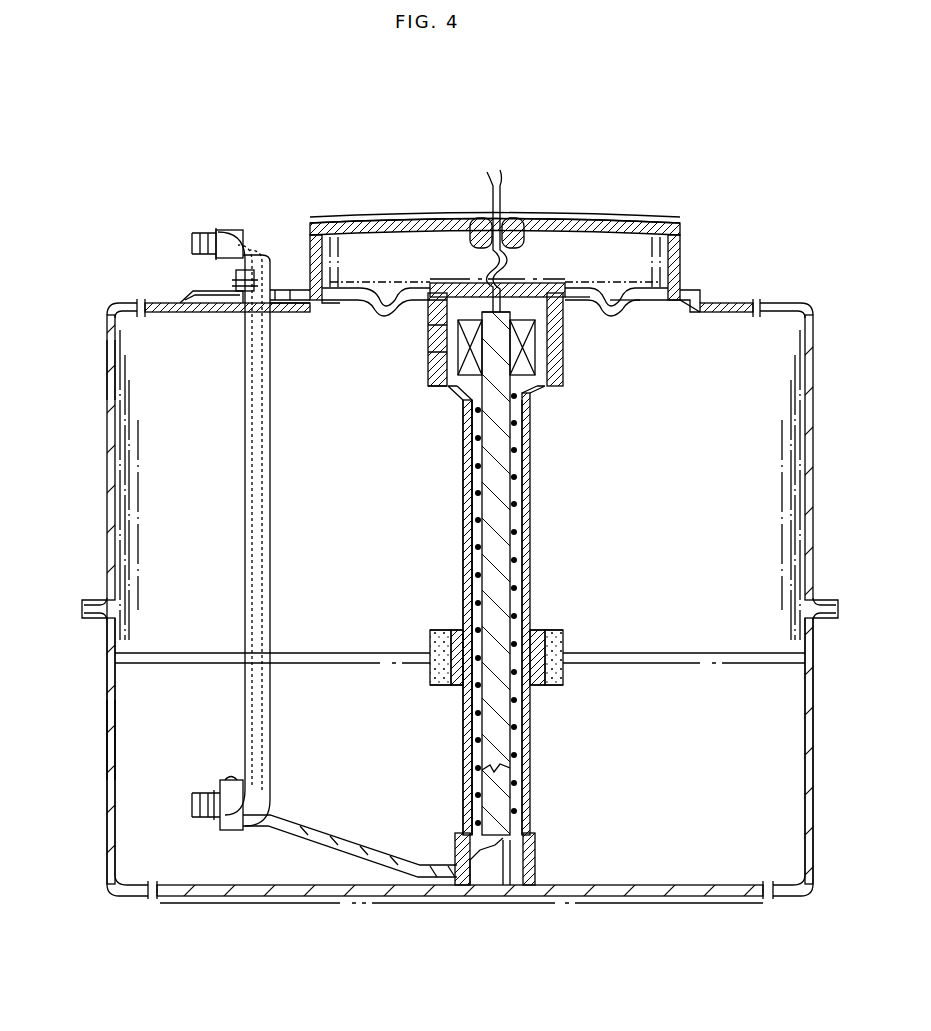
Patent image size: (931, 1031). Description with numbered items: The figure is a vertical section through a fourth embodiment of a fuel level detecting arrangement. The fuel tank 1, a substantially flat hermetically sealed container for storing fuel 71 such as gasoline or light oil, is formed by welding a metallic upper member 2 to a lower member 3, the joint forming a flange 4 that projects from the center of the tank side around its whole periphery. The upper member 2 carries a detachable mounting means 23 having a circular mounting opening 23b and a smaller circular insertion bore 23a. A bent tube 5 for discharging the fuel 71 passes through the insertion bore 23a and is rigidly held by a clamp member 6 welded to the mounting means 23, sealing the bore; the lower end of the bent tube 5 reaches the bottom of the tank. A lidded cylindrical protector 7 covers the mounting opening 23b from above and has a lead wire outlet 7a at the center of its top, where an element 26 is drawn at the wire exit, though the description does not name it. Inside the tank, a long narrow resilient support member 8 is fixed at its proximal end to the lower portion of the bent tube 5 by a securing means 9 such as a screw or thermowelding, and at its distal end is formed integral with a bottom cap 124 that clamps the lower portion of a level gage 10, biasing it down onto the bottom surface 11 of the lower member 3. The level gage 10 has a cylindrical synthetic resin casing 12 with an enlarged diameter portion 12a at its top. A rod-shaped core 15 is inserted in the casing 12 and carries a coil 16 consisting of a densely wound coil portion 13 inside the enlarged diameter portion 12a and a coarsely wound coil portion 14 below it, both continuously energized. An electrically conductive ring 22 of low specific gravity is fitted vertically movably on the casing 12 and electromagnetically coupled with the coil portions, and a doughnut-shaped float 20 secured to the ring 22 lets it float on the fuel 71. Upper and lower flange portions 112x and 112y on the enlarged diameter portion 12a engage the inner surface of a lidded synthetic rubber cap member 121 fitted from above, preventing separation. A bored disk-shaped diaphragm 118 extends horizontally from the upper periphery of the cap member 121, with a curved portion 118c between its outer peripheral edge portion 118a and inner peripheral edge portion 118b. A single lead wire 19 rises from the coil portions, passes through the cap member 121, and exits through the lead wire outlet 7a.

The fuel tank 1 is at (100, 370).
The upper member 2 is at (107, 425).
The lower member 3 is at (107, 740).
The flange 4 is at (94, 600).
The bent tube 5 is at (245, 436).
The clamp member 6 is at (283, 280).
The protector 7 is at (380, 222).
The lead wire outlet 7a is at (508, 215).
The support member 8 is at (290, 823).
The securing means 9 is at (226, 777).
The level gage 10 is at (445, 510).
The bottom surface 11 is at (284, 892).
The casing 12 is at (463, 456).
The enlarged diameter portion 12a is at (440, 345).
The densely wound coil portion 13 is at (455, 392).
The coarsely wound coil portion 14 is at (478, 490).
The core 15 is at (490, 545).
The coil 16 is at (470, 582).
The lead wire 19 is at (508, 252).
The float 20 is at (565, 634).
The electrically conductive ring 22 is at (540, 634).
The mounting means 23 is at (195, 291).
The insertion bore 23a is at (277, 305).
The mounting opening 23b is at (330, 305).
The grommet 26 is at (485, 215).
The fuel 71 is at (192, 653).
The upper flange portion 112x is at (430, 320).
The lower flange portion 112y is at (430, 370).
The diaphragm 118 is at (362, 292).
The outer peripheral edge portion 118a is at (678, 303).
The inner peripheral edge portion 118b is at (578, 300).
The curved portion 118c is at (622, 300).
The cap member 121 is at (458, 283).
The bottom cap 124 is at (535, 850).